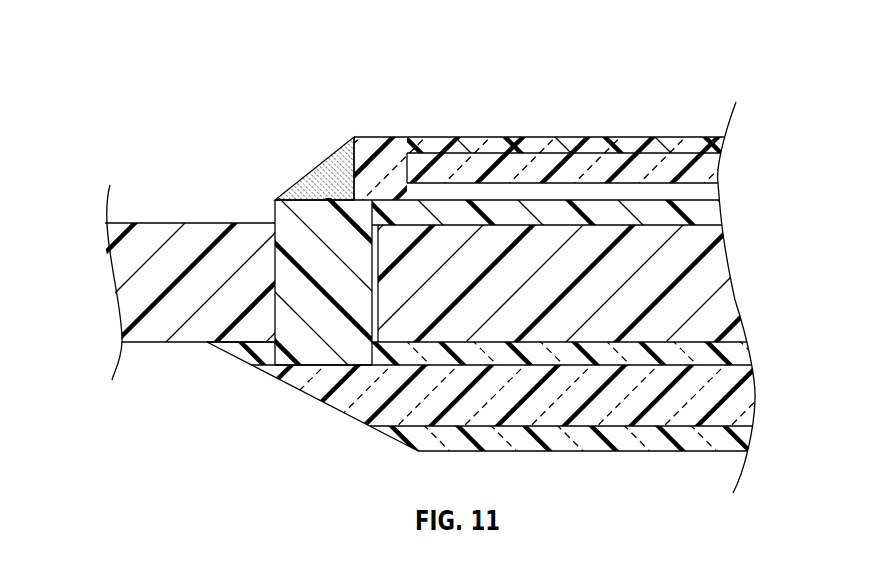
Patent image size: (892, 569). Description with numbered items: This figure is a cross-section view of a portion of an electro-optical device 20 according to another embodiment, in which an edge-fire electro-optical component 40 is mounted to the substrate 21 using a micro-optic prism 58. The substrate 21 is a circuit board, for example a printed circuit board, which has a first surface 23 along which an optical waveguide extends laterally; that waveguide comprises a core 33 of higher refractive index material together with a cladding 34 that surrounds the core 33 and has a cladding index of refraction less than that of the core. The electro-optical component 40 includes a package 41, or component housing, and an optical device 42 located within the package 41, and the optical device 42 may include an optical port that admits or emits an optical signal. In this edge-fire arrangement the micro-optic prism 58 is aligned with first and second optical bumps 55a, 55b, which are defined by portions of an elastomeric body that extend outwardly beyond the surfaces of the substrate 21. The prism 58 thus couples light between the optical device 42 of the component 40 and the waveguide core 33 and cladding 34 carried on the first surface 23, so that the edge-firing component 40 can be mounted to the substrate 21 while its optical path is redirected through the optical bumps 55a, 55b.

The electro-optical device 20 is at (266, 86).
The substrate 21 is at (148, 242).
The first surface 23 is at (163, 342).
The first optical bump 55a is at (287, 217).
The second optical bump 55b is at (298, 350).
The micro-optic prism 58 is at (335, 150).
The electro-optical component 40 is at (559, 109).
The package 41 is at (716, 150).
The optical device 42 is at (393, 150).
The core 33 is at (747, 408).
The cladding 34 is at (737, 352).